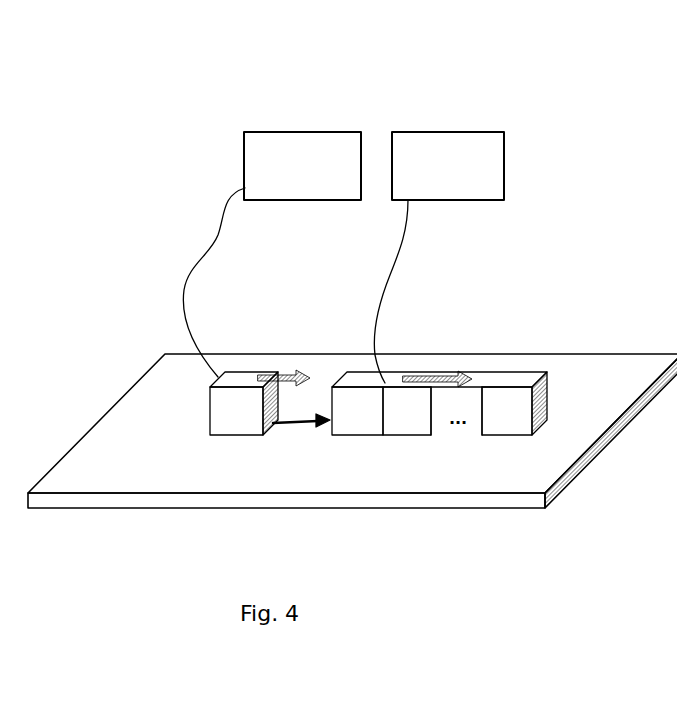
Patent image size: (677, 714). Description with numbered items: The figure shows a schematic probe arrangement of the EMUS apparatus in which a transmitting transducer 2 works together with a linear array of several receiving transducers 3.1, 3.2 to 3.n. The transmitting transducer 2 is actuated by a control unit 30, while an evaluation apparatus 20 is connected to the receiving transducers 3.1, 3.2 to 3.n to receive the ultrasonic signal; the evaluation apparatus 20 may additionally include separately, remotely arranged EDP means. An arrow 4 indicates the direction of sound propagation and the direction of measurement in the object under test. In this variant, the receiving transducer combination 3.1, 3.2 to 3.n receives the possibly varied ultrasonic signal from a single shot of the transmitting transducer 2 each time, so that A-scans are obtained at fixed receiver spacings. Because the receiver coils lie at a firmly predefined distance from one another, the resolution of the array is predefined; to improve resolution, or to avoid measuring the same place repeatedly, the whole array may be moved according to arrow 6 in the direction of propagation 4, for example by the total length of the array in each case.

The control unit 30 is at (292, 132).
The evaluation apparatus 20 is at (504, 163).
The transmitting transducer 2 is at (240, 378).
The arrow 6 is at (265, 377).
The receiving transducer 3.1 is at (371, 382).
The receiving transducer 3.2 is at (397, 385).
The receiving transducer 3.n is at (512, 384).
The arrow 4 is at (293, 425).